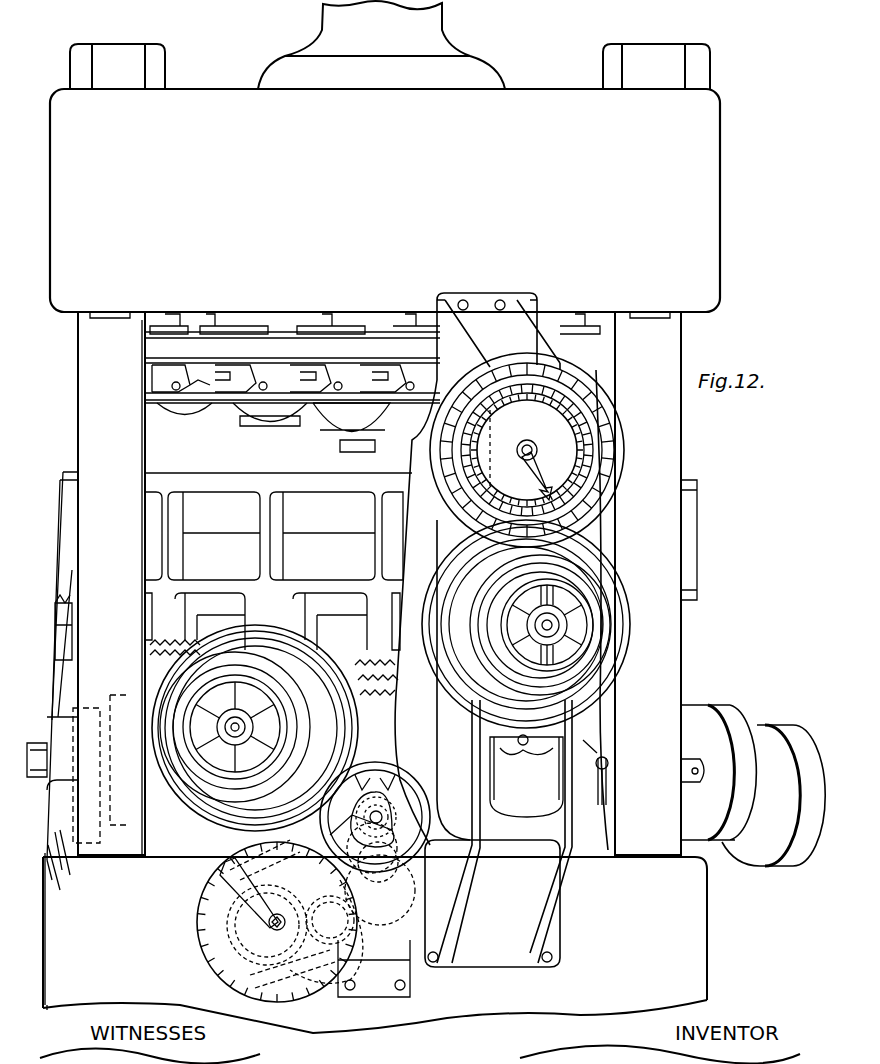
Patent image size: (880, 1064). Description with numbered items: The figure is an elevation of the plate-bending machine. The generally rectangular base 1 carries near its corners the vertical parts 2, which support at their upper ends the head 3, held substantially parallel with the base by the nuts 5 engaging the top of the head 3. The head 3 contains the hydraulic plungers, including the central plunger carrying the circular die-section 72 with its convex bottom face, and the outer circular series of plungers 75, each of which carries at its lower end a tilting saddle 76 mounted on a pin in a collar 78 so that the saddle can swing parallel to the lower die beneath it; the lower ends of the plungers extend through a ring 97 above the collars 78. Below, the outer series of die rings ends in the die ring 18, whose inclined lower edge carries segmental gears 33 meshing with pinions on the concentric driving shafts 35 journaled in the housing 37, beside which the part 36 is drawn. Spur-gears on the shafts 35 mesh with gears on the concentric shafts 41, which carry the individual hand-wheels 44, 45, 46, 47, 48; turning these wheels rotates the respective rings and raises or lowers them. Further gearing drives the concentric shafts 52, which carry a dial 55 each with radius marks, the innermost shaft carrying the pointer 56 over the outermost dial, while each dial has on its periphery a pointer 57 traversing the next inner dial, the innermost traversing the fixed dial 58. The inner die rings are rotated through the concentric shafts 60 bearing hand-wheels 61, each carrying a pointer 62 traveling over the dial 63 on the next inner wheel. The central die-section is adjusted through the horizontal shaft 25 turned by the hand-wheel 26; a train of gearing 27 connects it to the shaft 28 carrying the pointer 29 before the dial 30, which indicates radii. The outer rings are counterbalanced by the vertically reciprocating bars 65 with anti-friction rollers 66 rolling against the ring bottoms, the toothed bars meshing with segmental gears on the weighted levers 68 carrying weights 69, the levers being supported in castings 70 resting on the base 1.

The base 1 is at (375, 945).
The vertical parts 2 is at (374, 583).
The head 3 is at (385, 203).
The nuts 5 is at (390, 66).
The die ring 18 is at (278, 560).
The horizontal shaft 25 is at (372, 822).
The hand-wheel 26 is at (400, 782).
The train of gearing 27 is at (352, 903).
The shaft 28 is at (250, 925).
The pointer 29 is at (240, 878).
The dial 30 is at (197, 922).
The segmental gears 33 is at (274, 667).
The driving shafts 35 is at (567, 772).
The slide block 36 is at (526, 776).
The housing 37 is at (455, 848).
The concentric shafts 41 is at (560, 640).
The hand-wheel 44 is at (603, 558).
The hand-wheel 45 is at (612, 578).
The hand-wheel 46 is at (610, 598).
The hand-wheel 47 is at (605, 616).
The hand-wheel 48 is at (600, 638).
The concentric shafts 52 is at (527, 450).
The dial 55 is at (620, 513).
The pointer 56 is at (520, 477).
The pointer 57 is at (585, 515).
The fixed dial 58 is at (490, 365).
The concentric shafts 60 is at (225, 727).
The hand-wheels 61 is at (185, 715).
The pointer 62 is at (240, 727).
The dial 63 is at (200, 742).
The vertically reciprocating bars 65 is at (55, 715).
The anti-friction rollers 66 is at (50, 629).
The weighted levers 68 is at (680, 770).
The weight 69 is at (770, 725).
The castings 70 is at (328, 848).
The circular die-section 72 is at (340, 440).
The plungers 75 is at (185, 322).
The tilting saddle 76 is at (258, 420).
The collar 78 is at (305, 370).
The ring 97 is at (186, 364).